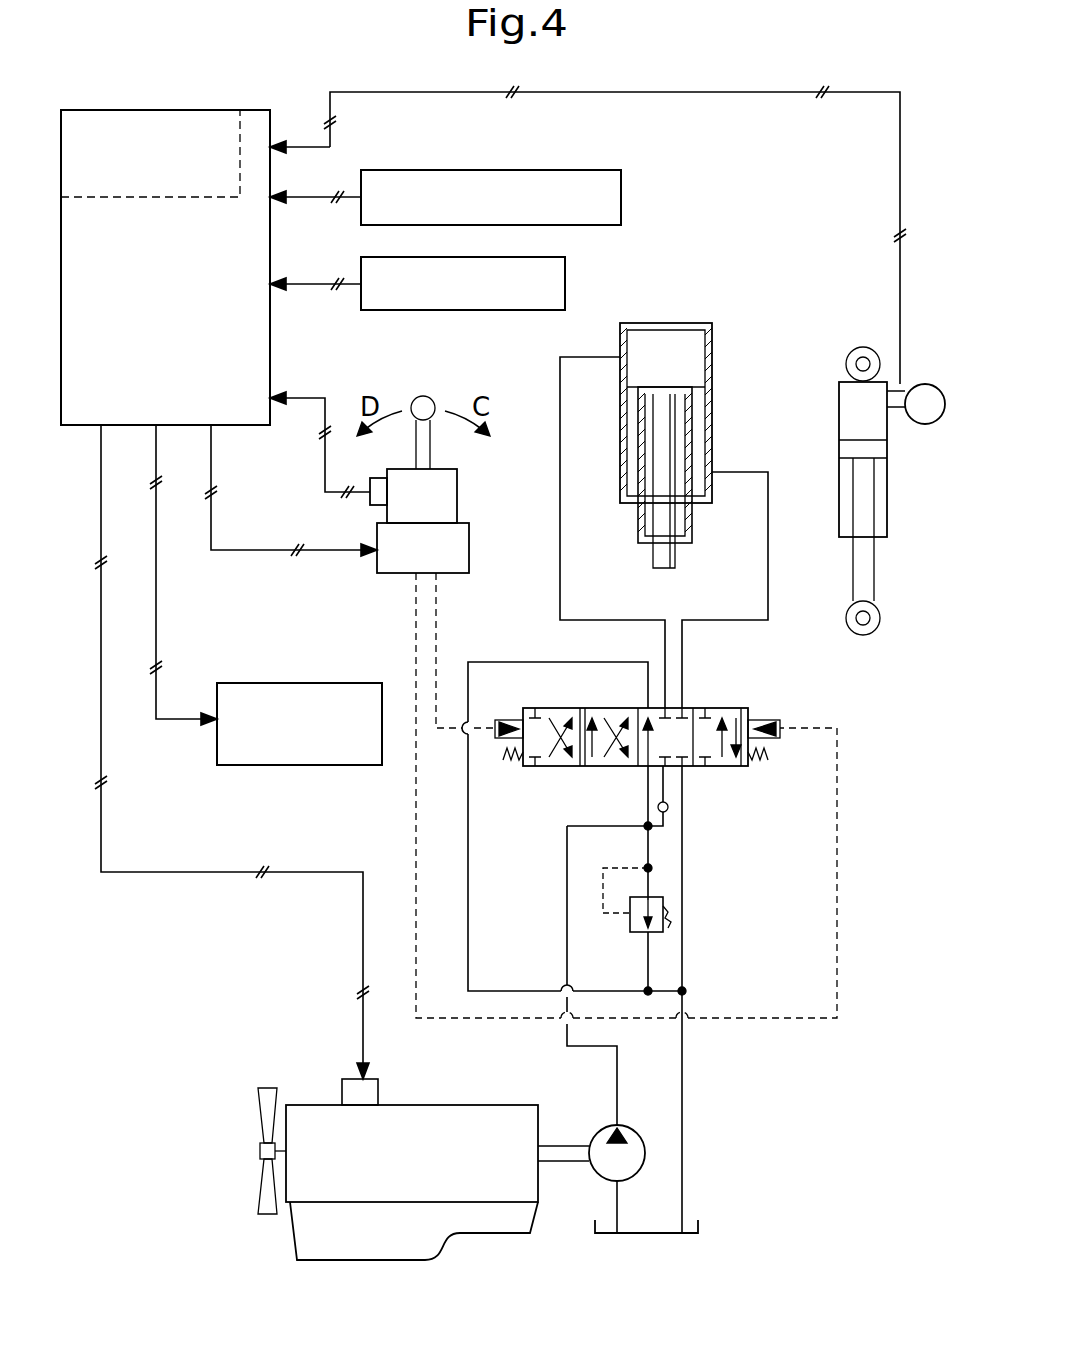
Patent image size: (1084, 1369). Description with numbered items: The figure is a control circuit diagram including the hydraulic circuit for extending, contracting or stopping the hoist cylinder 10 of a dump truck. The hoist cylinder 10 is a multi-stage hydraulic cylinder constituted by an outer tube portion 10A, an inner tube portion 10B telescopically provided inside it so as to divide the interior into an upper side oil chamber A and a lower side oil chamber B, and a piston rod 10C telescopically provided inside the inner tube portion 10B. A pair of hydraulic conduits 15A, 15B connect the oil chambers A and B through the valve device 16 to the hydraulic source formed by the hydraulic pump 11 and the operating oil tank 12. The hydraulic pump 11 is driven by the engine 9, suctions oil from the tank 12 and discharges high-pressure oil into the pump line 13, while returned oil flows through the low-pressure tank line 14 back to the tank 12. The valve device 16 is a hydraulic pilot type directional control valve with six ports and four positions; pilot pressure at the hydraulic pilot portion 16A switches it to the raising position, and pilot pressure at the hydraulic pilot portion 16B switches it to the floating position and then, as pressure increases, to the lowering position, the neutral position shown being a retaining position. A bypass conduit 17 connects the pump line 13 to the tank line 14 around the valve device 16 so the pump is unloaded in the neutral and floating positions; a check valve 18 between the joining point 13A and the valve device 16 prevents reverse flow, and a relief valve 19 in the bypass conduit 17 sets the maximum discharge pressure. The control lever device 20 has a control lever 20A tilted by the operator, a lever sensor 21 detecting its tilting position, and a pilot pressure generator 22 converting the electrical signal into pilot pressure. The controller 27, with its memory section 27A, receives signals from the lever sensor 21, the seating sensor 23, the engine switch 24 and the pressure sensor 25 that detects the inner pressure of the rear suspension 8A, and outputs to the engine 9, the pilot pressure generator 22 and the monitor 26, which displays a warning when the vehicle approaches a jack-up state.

The controller 27 is at (270, 337).
The memory section 27A is at (183, 108).
The engine switch 24 is at (540, 170).
The seating sensor 23 is at (565, 285).
The monitor 26 is at (290, 767).
The control lever device 20 is at (457, 500).
The control lever 20A is at (423, 396).
The lever sensor 21 is at (380, 503).
The pilot pressure generator 22 is at (457, 547).
The hoist cylinder 10 is at (652, 308).
The outer tube portion 10A is at (713, 360).
The inner tube portion 10B is at (700, 442).
The piston rod 10C is at (672, 560).
The upper side oil chamber A is at (688, 345).
The lower side oil chamber B is at (628, 448).
The hydraulic conduit 15A is at (560, 597).
The hydraulic conduit 15B is at (768, 600).
The pressure sensor 25 is at (918, 383).
The rear suspension 8A is at (839, 519).
The valve device 16 is at (563, 768).
The hydraulic pilot portion 16A is at (768, 716).
The hydraulic pilot portion 16B is at (505, 750).
The bypass conduit 17 is at (466, 930).
The pump line 13 is at (565, 955).
The joining point 13A is at (647, 824).
The check valve 18 is at (669, 807).
The relief valve 19 is at (663, 898).
The tank line 14 is at (683, 1085).
The operating oil tank 12 is at (700, 1230).
The hydraulic pump 11 is at (600, 1128).
The engine 9 is at (305, 1240).